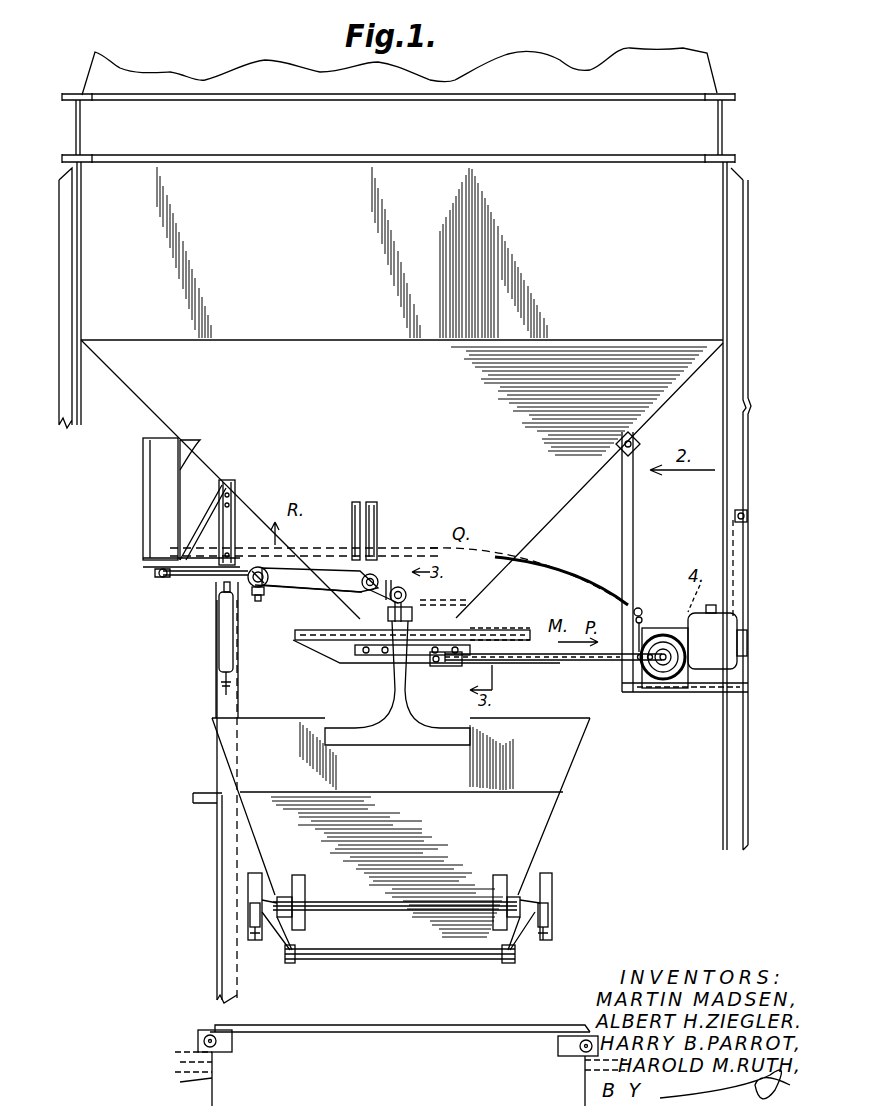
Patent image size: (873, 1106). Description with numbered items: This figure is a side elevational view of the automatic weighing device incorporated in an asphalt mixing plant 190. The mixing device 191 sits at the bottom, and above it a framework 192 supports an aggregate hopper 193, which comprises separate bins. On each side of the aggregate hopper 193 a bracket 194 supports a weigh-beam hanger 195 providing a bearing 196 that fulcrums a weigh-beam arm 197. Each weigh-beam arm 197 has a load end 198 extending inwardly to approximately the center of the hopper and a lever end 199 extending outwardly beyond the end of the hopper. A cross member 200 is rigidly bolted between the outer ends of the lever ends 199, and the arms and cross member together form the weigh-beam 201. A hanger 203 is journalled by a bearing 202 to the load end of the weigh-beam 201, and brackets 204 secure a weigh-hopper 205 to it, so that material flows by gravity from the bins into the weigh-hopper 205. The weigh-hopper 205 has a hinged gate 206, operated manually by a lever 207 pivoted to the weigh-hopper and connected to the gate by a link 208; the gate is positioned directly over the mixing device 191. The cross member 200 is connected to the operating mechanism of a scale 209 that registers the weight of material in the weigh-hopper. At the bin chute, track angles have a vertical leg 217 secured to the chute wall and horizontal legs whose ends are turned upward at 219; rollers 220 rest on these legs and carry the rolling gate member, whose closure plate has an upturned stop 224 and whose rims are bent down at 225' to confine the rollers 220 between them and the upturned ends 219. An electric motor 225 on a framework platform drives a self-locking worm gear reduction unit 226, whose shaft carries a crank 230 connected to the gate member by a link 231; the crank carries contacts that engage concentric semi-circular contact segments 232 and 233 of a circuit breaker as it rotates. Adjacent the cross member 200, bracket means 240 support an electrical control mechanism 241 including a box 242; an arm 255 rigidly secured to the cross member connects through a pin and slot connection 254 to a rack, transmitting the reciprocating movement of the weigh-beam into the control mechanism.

The mixing plant 190 is at (137, 652).
The mixing device 191 is at (180, 1082).
The framework 192 is at (59, 322).
The aggregate hopper 193 is at (425, 384).
The bracket 194 is at (372, 515).
The weigh-beam hanger 195 is at (320, 580).
The bearing 196 is at (380, 565).
The weigh-beam arm 197 is at (317, 577).
The load end 198 is at (373, 592).
The lever end 199 is at (298, 602).
The cross member 200 is at (262, 574).
The weigh-beam 201 is at (391, 632).
The bearing 202 is at (470, 580).
The hanger 203 is at (445, 596).
The bracket 204 is at (393, 700).
The weigh-hopper 205 is at (401, 827).
The hinged gate 206 is at (390, 963).
The lever 207 is at (217, 832).
The link 208 is at (248, 895).
The scale 209 is at (212, 625).
The vertical leg 217 is at (512, 665).
The upwardly turned end 219 is at (330, 655).
The rollers 220 is at (368, 658).
The stop 224 is at (455, 666).
The electric motor 225 is at (738, 632).
The downwardly bent portions 225' is at (500, 621).
The gear reduction unit 226 is at (660, 640).
The crank 230 is at (633, 662).
The link 231 is at (572, 660).
The contact segment 232 is at (670, 640).
The contact segment 233 is at (672, 680).
The bracket means 240 is at (190, 448).
The electrical control mechanism 241 is at (124, 509).
The box 242 is at (155, 538).
The pin and slot connection 254 is at (160, 577).
The arm 255 is at (200, 573).